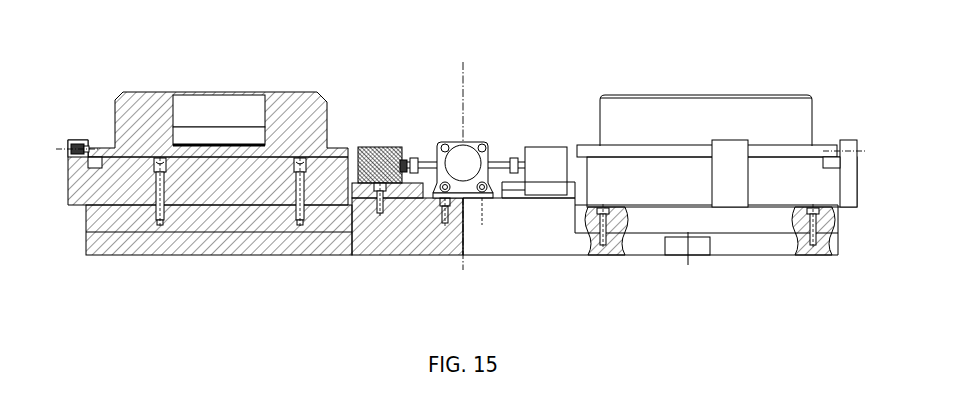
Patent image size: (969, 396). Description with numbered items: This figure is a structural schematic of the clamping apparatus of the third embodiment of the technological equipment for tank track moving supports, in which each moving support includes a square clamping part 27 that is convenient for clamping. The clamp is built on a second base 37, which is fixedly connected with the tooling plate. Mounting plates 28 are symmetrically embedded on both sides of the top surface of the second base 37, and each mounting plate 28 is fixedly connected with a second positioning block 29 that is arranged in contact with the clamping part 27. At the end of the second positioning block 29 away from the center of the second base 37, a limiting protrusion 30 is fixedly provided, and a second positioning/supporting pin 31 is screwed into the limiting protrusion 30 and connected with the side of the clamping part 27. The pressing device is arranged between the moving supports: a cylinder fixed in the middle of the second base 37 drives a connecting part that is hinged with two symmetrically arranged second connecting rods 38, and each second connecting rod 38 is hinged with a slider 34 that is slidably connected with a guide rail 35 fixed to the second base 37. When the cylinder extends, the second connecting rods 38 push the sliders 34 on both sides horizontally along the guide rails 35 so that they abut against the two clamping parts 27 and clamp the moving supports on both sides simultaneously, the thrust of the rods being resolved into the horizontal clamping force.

The clamping part 27 is at (352, 195).
The mounting plate 28 is at (117, 215).
The second positioning block 29 is at (208, 185).
The limiting protrusion 30 is at (70, 148).
The second positioning/supporting pin 31 is at (87, 150).
The slider 34 is at (382, 147).
The guide rail 35 is at (423, 193).
The second base 37 is at (520, 225).
The second connecting rod 38 is at (432, 165).